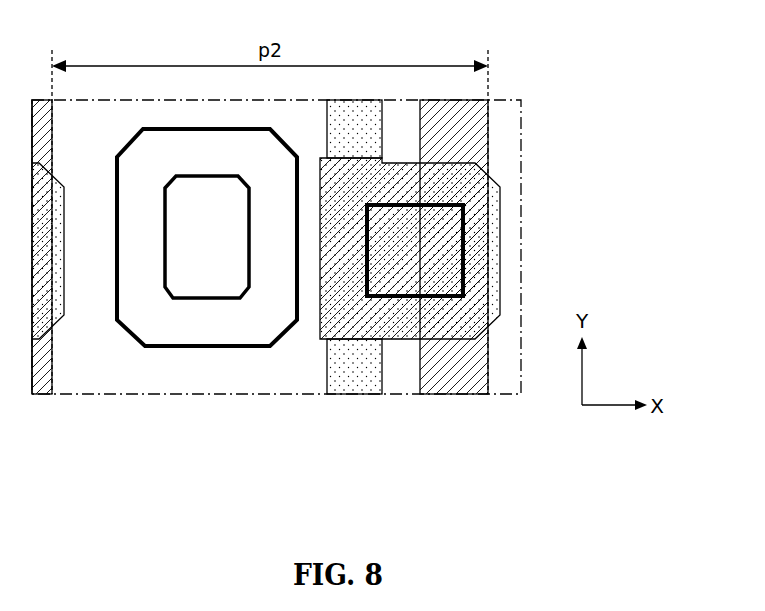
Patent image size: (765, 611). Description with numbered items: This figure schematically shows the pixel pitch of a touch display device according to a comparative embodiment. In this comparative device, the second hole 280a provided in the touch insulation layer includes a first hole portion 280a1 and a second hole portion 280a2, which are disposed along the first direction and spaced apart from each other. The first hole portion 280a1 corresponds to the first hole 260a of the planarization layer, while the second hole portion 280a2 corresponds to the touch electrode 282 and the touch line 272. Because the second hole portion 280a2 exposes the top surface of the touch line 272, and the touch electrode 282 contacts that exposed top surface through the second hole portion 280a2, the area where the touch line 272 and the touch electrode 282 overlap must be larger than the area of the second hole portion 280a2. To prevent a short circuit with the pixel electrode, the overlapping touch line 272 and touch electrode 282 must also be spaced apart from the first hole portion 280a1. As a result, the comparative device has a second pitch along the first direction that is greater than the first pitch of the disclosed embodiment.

The first hole 260a is at (200, 304).
The touch line 272 is at (462, 377).
The second hole 280a is at (308, 331).
The first hole portion 280a1 is at (254, 352).
The second hole portion 280a2 is at (376, 302).
The touch electrode 282 is at (357, 379).